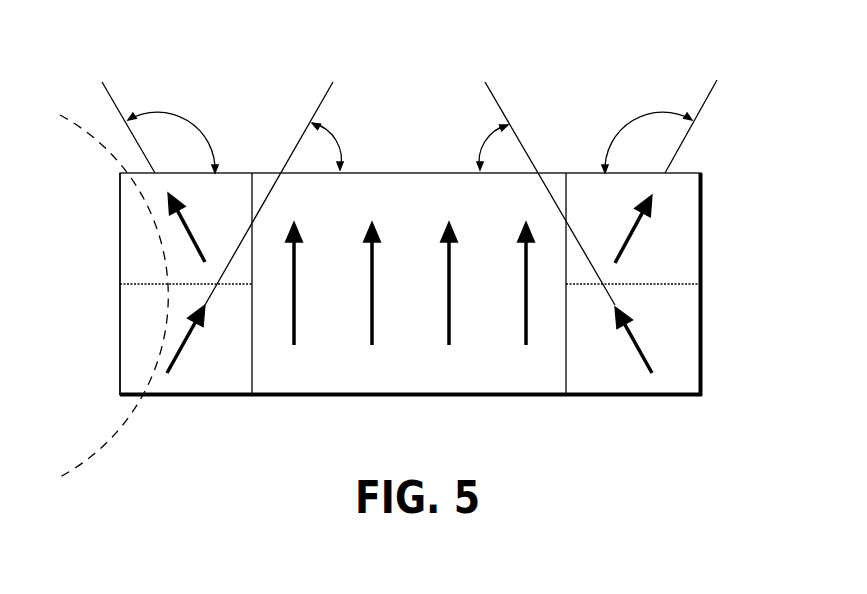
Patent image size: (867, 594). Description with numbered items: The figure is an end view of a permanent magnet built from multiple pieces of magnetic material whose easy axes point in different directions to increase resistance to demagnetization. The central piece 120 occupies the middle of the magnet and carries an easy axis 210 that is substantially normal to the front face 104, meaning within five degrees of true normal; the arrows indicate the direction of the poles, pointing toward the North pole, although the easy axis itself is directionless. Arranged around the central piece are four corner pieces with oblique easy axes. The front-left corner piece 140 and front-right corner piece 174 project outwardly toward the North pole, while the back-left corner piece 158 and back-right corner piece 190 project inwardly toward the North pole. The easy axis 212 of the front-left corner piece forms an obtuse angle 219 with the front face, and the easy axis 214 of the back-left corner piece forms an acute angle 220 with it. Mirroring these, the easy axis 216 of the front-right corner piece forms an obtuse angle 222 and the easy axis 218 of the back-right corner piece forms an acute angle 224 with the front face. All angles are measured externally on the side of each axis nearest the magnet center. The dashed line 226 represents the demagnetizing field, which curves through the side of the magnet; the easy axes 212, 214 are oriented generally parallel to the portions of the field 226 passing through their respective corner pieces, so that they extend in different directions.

The front face 104 is at (362, 170).
The central piece 120 is at (330, 395).
The front-left corner piece 140 is at (120, 227).
The back-left corner piece 158 is at (185, 395).
The front-right corner piece 174 is at (703, 225).
The back-right corner piece 190 is at (633, 395).
The easy axis 210 is at (373, 315).
The easy axis 212 is at (110, 92).
The easy axis 214 is at (322, 103).
The easy axis 216 is at (710, 92).
The easy axis 218 is at (497, 100).
The obtuse angle 219 is at (190, 117).
The acute angle 220 is at (337, 142).
The obtuse angle 222 is at (630, 121).
The acute angle 224 is at (484, 142).
The demagnetizing field 226 is at (104, 438).